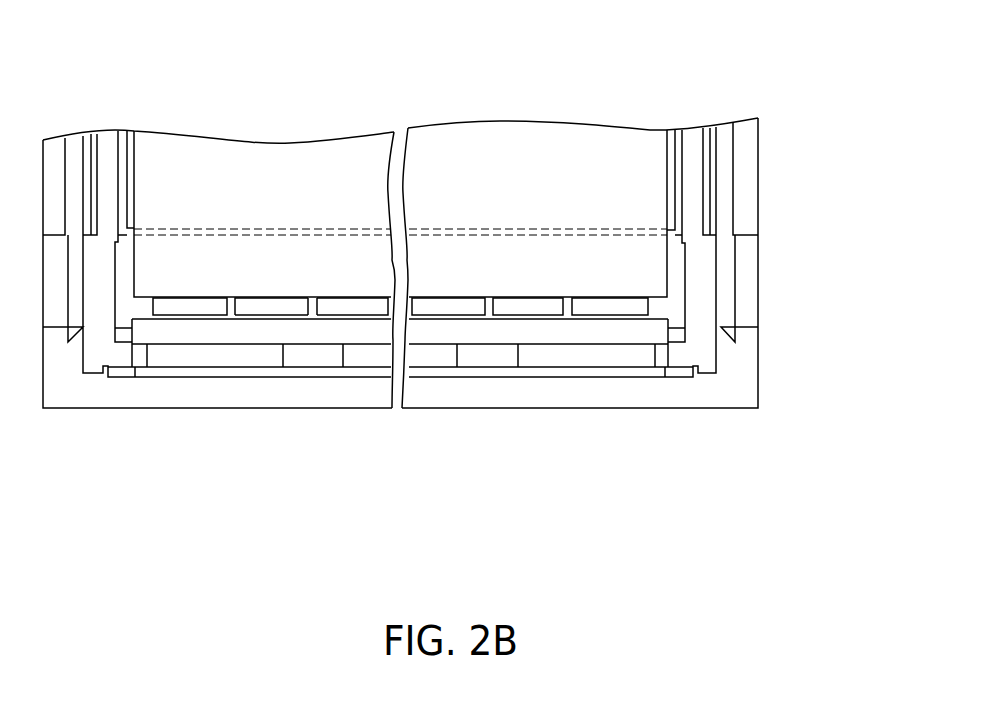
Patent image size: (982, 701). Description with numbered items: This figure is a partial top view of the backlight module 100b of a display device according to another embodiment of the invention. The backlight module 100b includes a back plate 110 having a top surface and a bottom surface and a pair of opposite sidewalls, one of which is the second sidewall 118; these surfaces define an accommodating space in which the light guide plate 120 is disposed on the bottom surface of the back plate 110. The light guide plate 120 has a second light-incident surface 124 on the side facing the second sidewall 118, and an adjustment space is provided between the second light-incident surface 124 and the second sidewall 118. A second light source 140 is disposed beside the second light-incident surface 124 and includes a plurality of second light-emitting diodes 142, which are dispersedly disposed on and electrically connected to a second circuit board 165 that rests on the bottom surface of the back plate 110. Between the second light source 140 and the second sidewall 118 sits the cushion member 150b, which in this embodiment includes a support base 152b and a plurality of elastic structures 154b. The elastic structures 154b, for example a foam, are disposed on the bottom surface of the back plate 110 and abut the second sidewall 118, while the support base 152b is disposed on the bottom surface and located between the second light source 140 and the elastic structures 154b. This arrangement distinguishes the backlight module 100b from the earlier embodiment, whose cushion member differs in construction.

The backlight module 100b is at (774, 465).
The back plate 110 is at (400, 321).
The second sidewall 118 is at (638, 372).
The light guide plate 120 is at (655, 265).
The second light-incident surface 124 is at (313, 298).
The second light source 140 is at (595, 181).
The second light-emitting diodes 142 is at (452, 305).
The cushion member 150b is at (550, 468).
The support base 152b is at (508, 332).
The elastic structures 154b is at (165, 362).
The second circuit board 165 is at (229, 330).